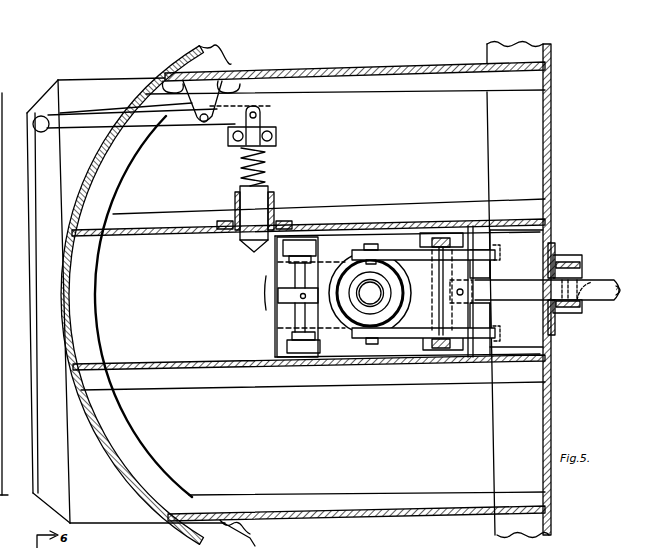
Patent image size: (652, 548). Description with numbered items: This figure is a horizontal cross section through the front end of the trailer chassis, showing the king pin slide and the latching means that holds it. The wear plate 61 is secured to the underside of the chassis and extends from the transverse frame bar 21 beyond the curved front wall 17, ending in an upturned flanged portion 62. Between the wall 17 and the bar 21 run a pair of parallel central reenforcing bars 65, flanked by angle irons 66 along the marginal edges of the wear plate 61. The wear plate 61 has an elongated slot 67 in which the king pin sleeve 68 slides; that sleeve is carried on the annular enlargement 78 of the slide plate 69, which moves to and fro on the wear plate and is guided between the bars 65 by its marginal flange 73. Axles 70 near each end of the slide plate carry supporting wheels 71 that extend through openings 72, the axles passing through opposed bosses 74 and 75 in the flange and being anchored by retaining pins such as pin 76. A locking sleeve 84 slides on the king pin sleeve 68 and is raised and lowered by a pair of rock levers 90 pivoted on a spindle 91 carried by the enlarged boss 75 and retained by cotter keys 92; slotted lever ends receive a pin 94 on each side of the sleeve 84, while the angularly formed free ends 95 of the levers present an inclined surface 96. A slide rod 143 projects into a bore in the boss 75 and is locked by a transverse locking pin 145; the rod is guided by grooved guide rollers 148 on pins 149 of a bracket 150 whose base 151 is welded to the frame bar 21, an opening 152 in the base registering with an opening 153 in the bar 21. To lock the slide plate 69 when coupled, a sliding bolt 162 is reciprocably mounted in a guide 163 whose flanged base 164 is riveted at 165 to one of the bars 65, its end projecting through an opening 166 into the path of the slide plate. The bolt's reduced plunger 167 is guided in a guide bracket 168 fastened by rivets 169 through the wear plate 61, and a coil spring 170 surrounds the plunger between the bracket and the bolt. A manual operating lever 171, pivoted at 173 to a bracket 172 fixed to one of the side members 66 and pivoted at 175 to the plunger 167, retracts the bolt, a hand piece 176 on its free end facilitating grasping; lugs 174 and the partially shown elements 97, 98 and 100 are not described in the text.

The curved front wall 17 is at (110, 465).
The transverse frame bar 21 is at (550, 155).
The wear plate 61 is at (112, 300).
The upturned flanged portion 62 is at (40, 397).
The central reenforcing bars 65 is at (150, 240).
The angle irons 66 is at (438, 66).
The elongated slot 67 is at (265, 312).
The king pin sleeve 68 is at (407, 294).
The slide plate 69 is at (272, 331).
The axles 70 is at (300, 280).
The supporting wheels 71 is at (287, 248).
The opening 72 is at (352, 250).
The marginal flange 73 is at (357, 250).
The boss 74 is at (298, 295).
The enlarged boss 75 is at (377, 293).
The retaining pin 76 is at (298, 297).
The annular enlargement 78 is at (333, 282).
The locking sleeve 84 is at (365, 344).
The rock levers 90 is at (398, 250).
The spindle 91 is at (387, 288).
The cotter keys 92 is at (444, 238).
The pin 94 is at (384, 240).
The free ends of the rock levers 95 is at (486, 226).
The inclined surface 96 is at (424, 290).
The element 97 is at (110, 546).
The element 98 is at (121, 540).
The element 100 is at (100, 547).
The slide rod 143 is at (608, 300).
The transverse locking pin 145 is at (461, 295).
The guide rollers 148 is at (592, 280).
The pins 149 is at (580, 279).
The bracket 150 is at (566, 256).
The base of the bracket 151 is at (555, 248).
The opening 152 is at (558, 320).
The opening 153 is at (542, 268).
The locking member 162 is at (252, 253).
The guide 163 is at (236, 199).
The flanged base portion 164 is at (282, 210).
The rivets 165 is at (293, 189).
The opening 166 is at (238, 244).
The plunger 167 is at (266, 164).
The guide bracket 168 is at (231, 146).
The rivets 169 is at (233, 137).
The coil spring 170 is at (240, 178).
The manual operating lever 171 is at (96, 117).
The bracket 172 is at (212, 92).
The pivot 173 is at (197, 130).
The lugs 174 is at (158, 82).
The pivot 175 is at (262, 113).
The manual hand piece 176 is at (36, 112).